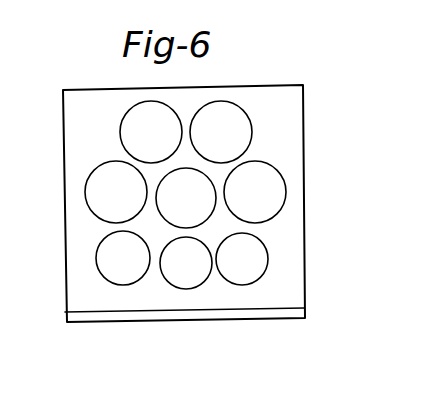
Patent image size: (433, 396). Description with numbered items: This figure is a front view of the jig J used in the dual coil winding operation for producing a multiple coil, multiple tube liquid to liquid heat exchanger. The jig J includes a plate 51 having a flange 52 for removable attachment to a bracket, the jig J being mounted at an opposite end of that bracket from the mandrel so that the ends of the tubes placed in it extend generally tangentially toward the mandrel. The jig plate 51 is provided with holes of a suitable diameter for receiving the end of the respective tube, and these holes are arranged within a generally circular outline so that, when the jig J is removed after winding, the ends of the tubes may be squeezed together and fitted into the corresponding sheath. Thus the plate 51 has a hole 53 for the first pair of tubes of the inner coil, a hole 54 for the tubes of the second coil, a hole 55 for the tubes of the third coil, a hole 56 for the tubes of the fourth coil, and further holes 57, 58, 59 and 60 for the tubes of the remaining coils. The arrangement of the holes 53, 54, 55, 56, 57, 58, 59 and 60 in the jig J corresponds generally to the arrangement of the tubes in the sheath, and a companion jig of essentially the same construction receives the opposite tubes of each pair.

The plate 51 is at (65, 176).
The flange 52 is at (113, 318).
The hole 53 is at (268, 259).
The hole 54 is at (173, 286).
The hole 55 is at (96, 256).
The hole 56 is at (283, 202).
The hole 57 is at (198, 213).
The hole 58 is at (94, 171).
The hole 59 is at (243, 115).
The hole 60 is at (128, 111).
The jig J is at (310, 95).